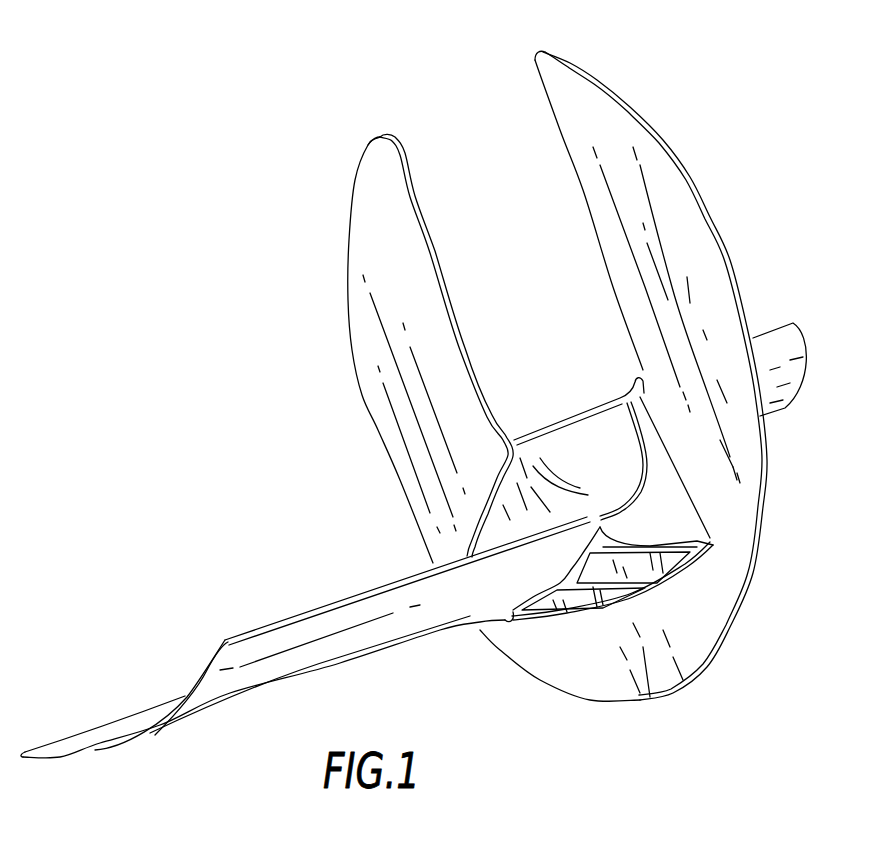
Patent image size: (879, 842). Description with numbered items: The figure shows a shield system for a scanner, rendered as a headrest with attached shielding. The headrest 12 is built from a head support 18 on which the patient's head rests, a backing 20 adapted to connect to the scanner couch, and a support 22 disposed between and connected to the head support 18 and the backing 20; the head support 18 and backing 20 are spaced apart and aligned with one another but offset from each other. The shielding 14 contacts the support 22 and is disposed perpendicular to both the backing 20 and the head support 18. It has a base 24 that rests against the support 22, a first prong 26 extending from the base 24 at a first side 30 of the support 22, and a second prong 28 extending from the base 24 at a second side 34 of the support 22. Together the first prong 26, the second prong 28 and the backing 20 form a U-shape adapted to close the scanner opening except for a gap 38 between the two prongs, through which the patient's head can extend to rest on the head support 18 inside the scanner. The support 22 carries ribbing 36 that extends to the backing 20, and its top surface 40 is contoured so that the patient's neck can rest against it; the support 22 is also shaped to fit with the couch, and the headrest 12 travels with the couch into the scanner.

The headrest 12 is at (647, 690).
The shielding 14 is at (543, 685).
The head support 18 is at (792, 343).
The backing 20 is at (107, 733).
The support 22 is at (590, 648).
The base 24 is at (705, 641).
The first prong 26 is at (412, 289).
The second prong 28 is at (722, 317).
The first side 30 is at (494, 645).
The second side 34 is at (740, 518).
The ribbing 36 is at (700, 552).
The gap 38 is at (412, 192).
The top surface 40 is at (599, 471).